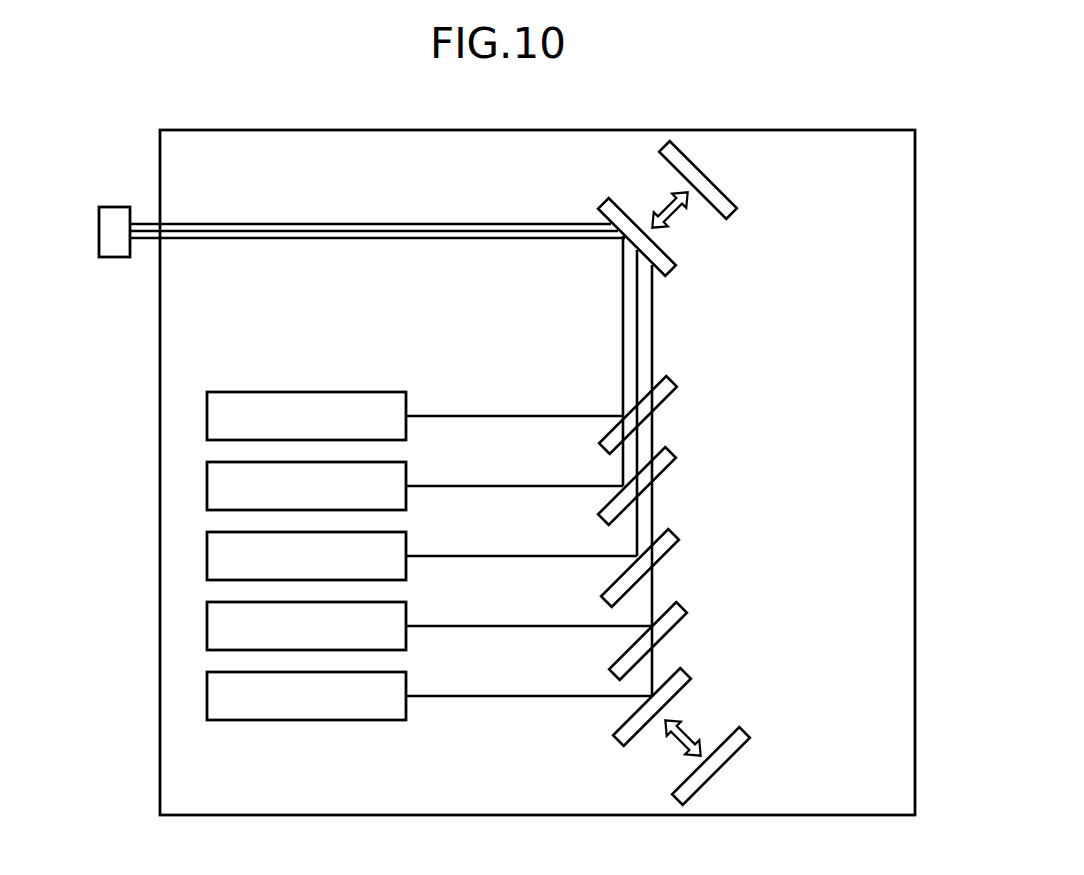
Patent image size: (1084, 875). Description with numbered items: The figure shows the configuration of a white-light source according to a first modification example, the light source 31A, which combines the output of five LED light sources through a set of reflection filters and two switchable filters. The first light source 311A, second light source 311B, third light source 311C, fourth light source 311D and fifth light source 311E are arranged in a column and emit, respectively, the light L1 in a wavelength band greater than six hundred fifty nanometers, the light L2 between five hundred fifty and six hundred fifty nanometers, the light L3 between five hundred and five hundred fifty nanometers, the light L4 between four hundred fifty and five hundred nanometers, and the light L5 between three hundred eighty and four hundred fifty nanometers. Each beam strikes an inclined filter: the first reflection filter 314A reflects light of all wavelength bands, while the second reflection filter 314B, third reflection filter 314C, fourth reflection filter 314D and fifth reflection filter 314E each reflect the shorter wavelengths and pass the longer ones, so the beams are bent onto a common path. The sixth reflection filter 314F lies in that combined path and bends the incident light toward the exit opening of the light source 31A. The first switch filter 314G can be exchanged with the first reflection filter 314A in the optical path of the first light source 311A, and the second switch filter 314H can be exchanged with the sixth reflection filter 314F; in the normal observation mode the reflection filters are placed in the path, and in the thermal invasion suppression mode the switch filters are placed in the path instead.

The light source 31A is at (866, 105).
The first light source 311A is at (207, 694).
The second light source 311B is at (207, 624).
The third light source 311C is at (207, 554).
The fourth light source 311D is at (207, 484).
The fifth light source 311E is at (207, 414).
The first reflection filter 314A is at (690, 676).
The second reflection filter 314B is at (682, 612).
The third reflection filter 314C is at (675, 530).
The fourth reflection filter 314D is at (670, 448).
The fifth reflection filter 314E is at (672, 380).
The sixth reflection filter 314F is at (672, 262).
The first switch filter 314G is at (740, 752).
The second switch filter 314H is at (735, 200).
The light L1 is at (571, 697).
The light L2 is at (498, 627).
The light L3 is at (434, 557).
The light L4 is at (459, 486).
The light L5 is at (542, 416).